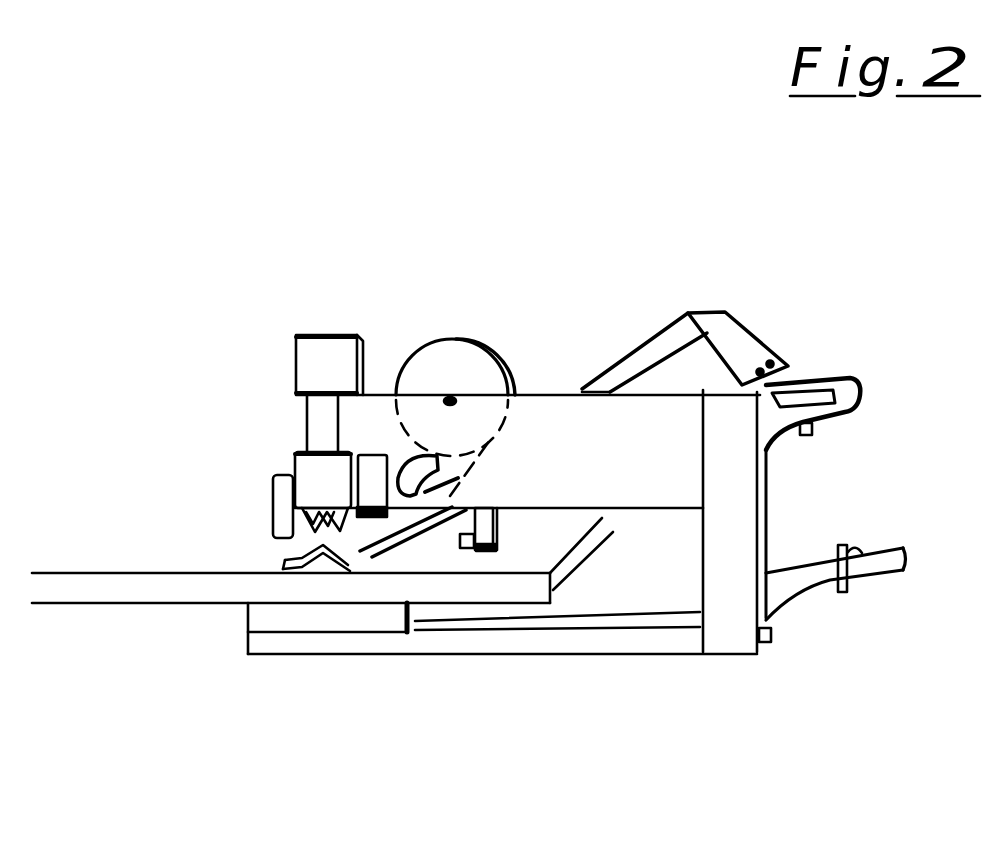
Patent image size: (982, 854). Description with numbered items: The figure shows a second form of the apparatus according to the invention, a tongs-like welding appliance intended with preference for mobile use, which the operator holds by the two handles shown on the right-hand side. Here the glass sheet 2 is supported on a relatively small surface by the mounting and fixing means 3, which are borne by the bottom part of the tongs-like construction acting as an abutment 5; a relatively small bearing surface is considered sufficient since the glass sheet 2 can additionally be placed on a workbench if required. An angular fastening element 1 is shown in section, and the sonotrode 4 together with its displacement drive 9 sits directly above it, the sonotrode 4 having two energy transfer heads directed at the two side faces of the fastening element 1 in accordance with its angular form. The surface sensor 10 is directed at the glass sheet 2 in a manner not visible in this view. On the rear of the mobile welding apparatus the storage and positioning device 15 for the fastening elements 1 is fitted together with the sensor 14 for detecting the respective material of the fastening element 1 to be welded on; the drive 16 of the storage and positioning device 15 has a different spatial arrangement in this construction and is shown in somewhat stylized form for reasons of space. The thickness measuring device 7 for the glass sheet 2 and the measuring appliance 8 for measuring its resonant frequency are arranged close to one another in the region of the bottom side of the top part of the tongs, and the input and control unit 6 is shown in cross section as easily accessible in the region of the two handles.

The fastening element 1 is at (290, 560).
The glass sheet 2 is at (112, 578).
The mounting and fixing means 3 is at (272, 623).
The sonotrode 4 is at (300, 462).
The abutment 5 is at (598, 638).
The input and control unit 6 is at (740, 335).
The thickness measuring device 7 is at (488, 552).
The measuring appliance 8 is at (462, 548).
The displacement drive 9 is at (315, 337).
The surface sensor 10 is at (272, 503).
The sensor 14 is at (417, 473).
The storage and positioning device 15 is at (457, 353).
The drive 16 is at (373, 492).